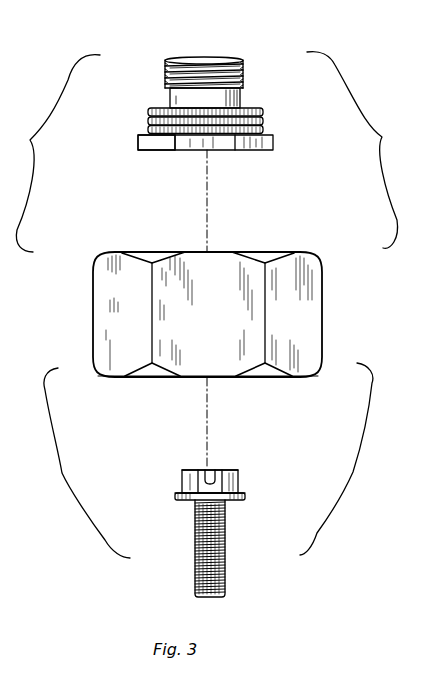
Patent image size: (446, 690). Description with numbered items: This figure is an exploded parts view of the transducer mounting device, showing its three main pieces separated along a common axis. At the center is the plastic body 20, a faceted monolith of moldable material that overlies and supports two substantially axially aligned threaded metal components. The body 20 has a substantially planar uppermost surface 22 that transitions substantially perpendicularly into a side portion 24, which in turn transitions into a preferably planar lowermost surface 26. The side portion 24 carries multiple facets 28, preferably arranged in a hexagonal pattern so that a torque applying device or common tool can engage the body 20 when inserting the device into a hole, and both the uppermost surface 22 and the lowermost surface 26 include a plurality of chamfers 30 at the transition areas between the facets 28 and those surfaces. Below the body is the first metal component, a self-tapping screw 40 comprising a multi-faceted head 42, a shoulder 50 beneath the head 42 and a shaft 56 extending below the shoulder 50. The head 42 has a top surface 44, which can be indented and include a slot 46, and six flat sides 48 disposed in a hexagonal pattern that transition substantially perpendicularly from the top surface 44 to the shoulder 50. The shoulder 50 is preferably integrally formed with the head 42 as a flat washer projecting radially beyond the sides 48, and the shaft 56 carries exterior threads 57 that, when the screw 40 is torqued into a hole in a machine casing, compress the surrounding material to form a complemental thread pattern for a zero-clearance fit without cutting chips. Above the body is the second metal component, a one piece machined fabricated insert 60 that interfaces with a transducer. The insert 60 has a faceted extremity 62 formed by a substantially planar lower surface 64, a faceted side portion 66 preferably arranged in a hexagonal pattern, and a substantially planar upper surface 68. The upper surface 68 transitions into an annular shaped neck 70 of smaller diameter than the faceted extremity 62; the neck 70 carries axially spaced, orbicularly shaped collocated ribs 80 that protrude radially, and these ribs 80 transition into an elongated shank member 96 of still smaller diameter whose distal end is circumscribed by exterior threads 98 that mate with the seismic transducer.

The plastic body 20 is at (93, 233).
The uppermost surface 22 is at (188, 252).
The side portion 24 is at (310, 283).
The lowermost surface 26 is at (178, 377).
The facets 28 is at (132, 333).
The chamfers 30 is at (150, 252).
The self-tapping screw 40 is at (182, 526).
The head 42 is at (183, 488).
The top surface 44 is at (187, 468).
The slot 46 is at (211, 474).
The flat sides 48 is at (239, 481).
The shoulder 50 is at (244, 498).
The shaft 56 is at (225, 546).
The exterior threads 57 is at (225, 576).
The fabricated insert 60 is at (258, 67).
The faceted extremity 62 is at (276, 139).
The lower surface 64 is at (257, 148).
The faceted side portion 66 is at (220, 150).
The upper surface 68 is at (265, 132).
The annular shaped neck 70 is at (137, 131).
The collocated ribs 80 is at (147, 125).
The elongated shank member 96 is at (170, 100).
The exterior threads 98 is at (207, 57).